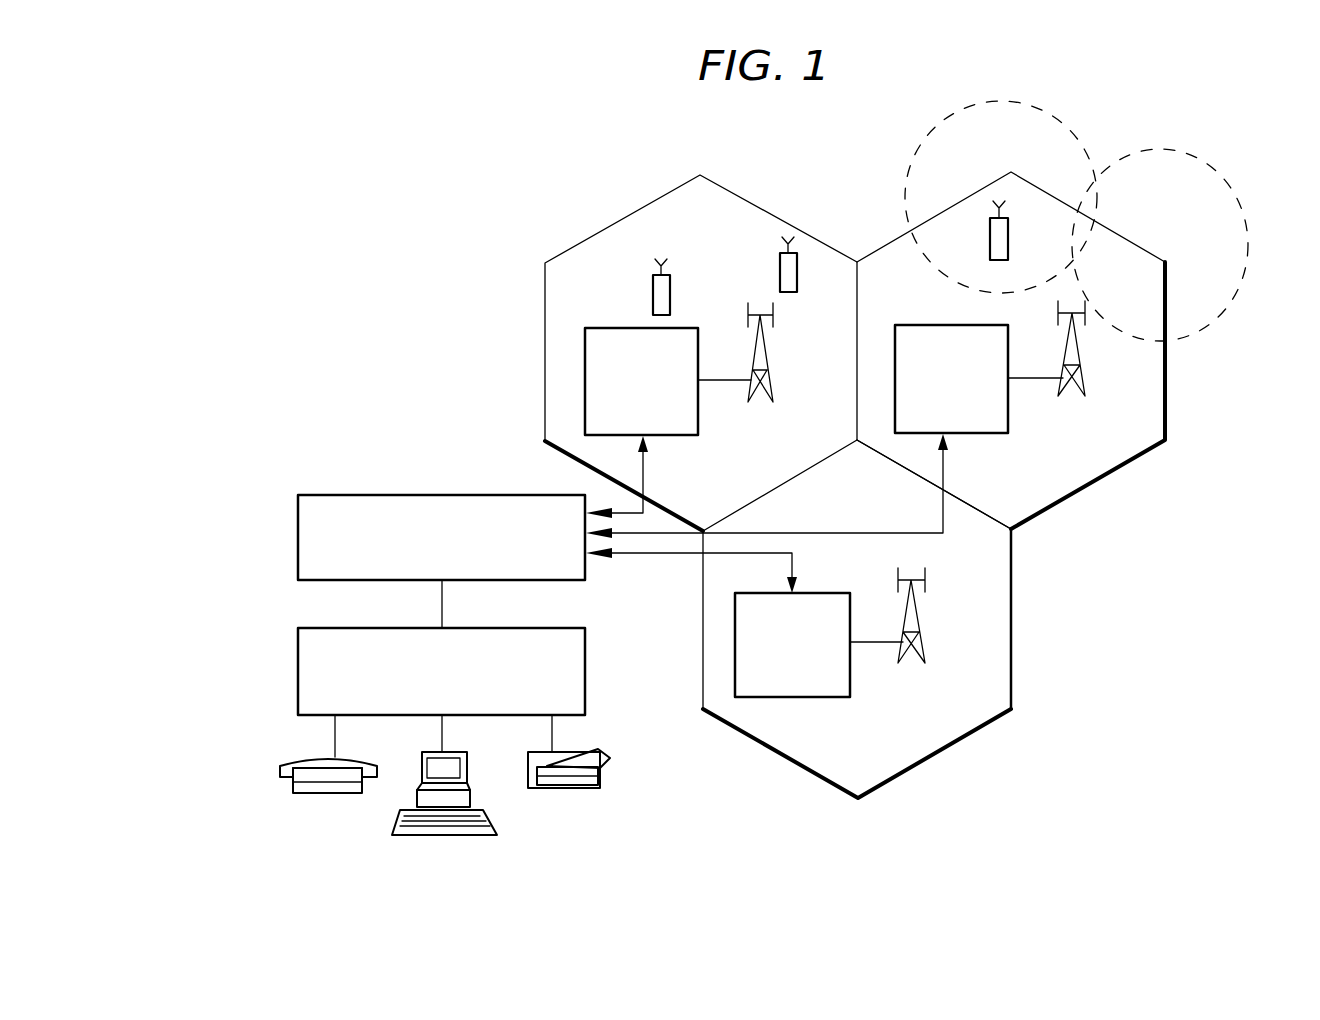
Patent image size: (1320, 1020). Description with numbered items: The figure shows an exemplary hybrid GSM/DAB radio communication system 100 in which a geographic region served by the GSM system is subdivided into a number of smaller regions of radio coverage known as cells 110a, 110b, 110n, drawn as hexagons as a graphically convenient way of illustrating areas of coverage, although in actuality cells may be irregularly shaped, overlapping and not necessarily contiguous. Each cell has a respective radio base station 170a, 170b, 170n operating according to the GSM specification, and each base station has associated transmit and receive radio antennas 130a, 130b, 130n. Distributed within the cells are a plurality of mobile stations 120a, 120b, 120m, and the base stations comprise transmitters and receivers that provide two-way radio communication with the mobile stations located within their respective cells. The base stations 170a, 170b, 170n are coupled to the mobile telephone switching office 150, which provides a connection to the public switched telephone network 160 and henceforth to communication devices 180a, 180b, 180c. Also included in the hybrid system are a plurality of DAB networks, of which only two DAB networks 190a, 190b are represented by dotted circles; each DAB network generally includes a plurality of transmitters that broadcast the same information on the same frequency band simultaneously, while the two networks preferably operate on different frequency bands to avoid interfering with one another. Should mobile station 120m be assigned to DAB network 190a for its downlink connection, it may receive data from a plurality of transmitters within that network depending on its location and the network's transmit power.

The hybrid GSM/DAB radio communication system 100 is at (470, 220).
The cell 110a is at (699, 175).
The cell 110b is at (1010, 170).
The cell 110n is at (858, 800).
The mobile station 120a is at (653, 298).
The mobile station 120b is at (780, 271).
The mobile station 120m is at (1008, 238).
The radio antenna 130a is at (772, 361).
The radio antenna 130b is at (1083, 358).
The radio antenna 130n is at (923, 622).
The mobile telephone switching office 150 is at (298, 538).
The public switched telephone network 160 is at (298, 671).
The radio base station 170a is at (686, 436).
The radio base station 170b is at (1000, 434).
The radio base station 170n is at (835, 698).
The communication device 180a is at (325, 794).
The communication device 180b is at (441, 838).
The communication device 180c is at (560, 791).
The DAB network 190a is at (1003, 100).
The DAB network 190b is at (1176, 149).